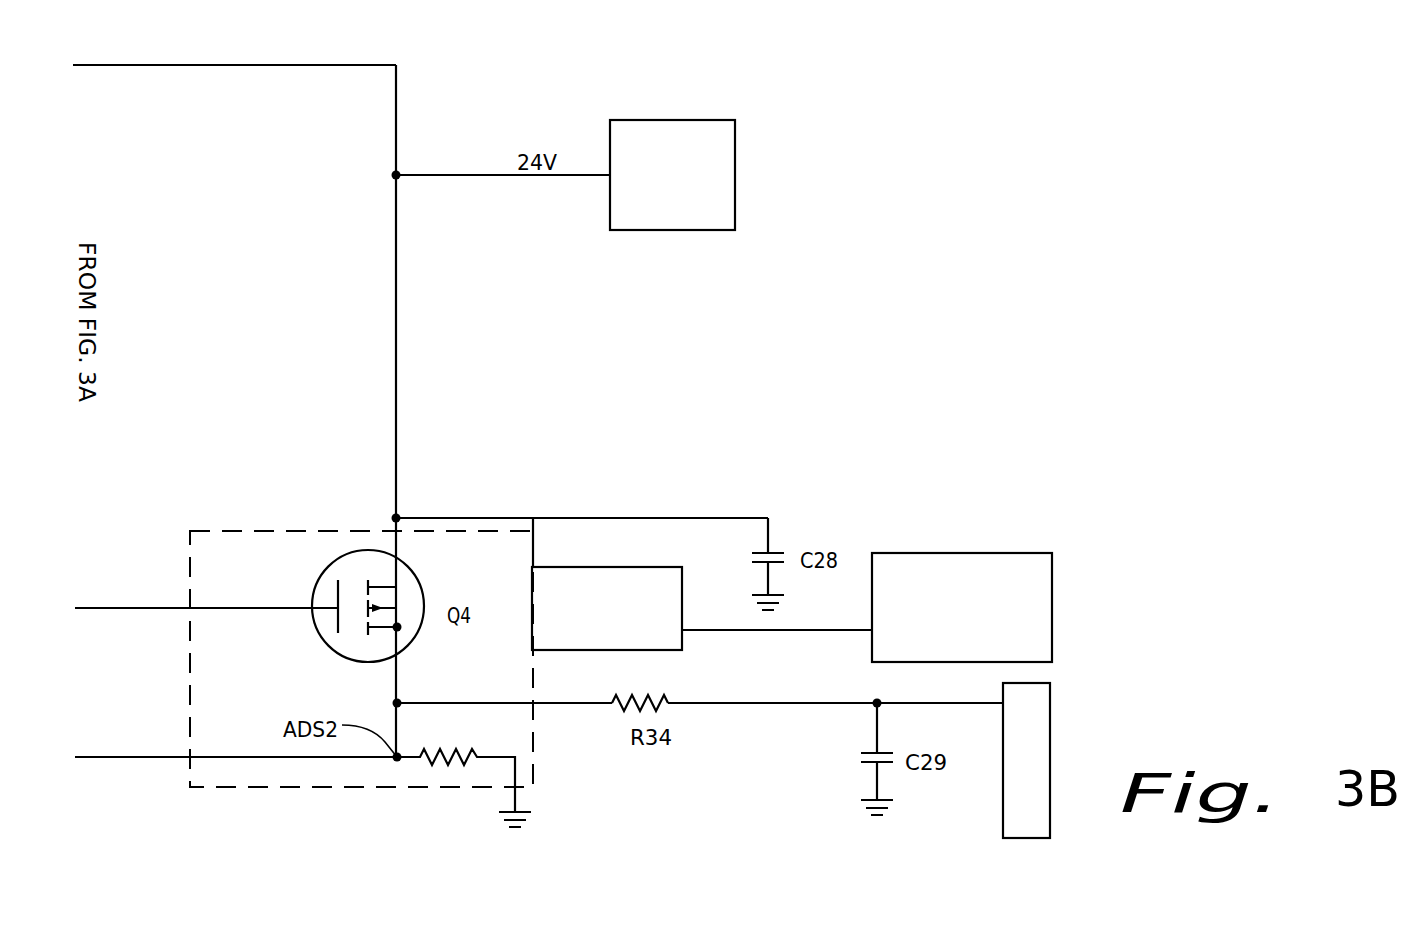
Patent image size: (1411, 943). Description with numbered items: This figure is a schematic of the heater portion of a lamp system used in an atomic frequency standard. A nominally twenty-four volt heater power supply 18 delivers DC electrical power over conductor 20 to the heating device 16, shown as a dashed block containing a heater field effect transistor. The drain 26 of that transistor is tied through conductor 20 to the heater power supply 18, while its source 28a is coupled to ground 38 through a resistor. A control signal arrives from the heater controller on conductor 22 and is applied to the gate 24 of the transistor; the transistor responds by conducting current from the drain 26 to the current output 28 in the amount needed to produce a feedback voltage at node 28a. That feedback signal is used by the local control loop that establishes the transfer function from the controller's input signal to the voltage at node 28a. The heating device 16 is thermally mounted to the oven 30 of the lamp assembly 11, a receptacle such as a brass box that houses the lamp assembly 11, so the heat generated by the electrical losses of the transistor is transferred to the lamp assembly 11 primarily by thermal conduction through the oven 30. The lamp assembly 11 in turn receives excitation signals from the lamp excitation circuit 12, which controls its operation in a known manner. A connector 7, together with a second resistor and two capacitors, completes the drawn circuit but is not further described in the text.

The connector 7 is at (1026, 760).
The lamp assembly 11 is at (615, 568).
The lamp excitation circuit 12 is at (1043, 572).
The heating device 16 is at (473, 550).
The heater power supply 18 is at (735, 158).
The conductor 20 is at (397, 372).
The conductor 22 is at (292, 610).
The gate 24 is at (310, 611).
The drain 26 is at (396, 518).
The current output 28 is at (505, 773).
The source 28a is at (398, 683).
The oven 30 is at (533, 560).
The ground 38 is at (517, 798).